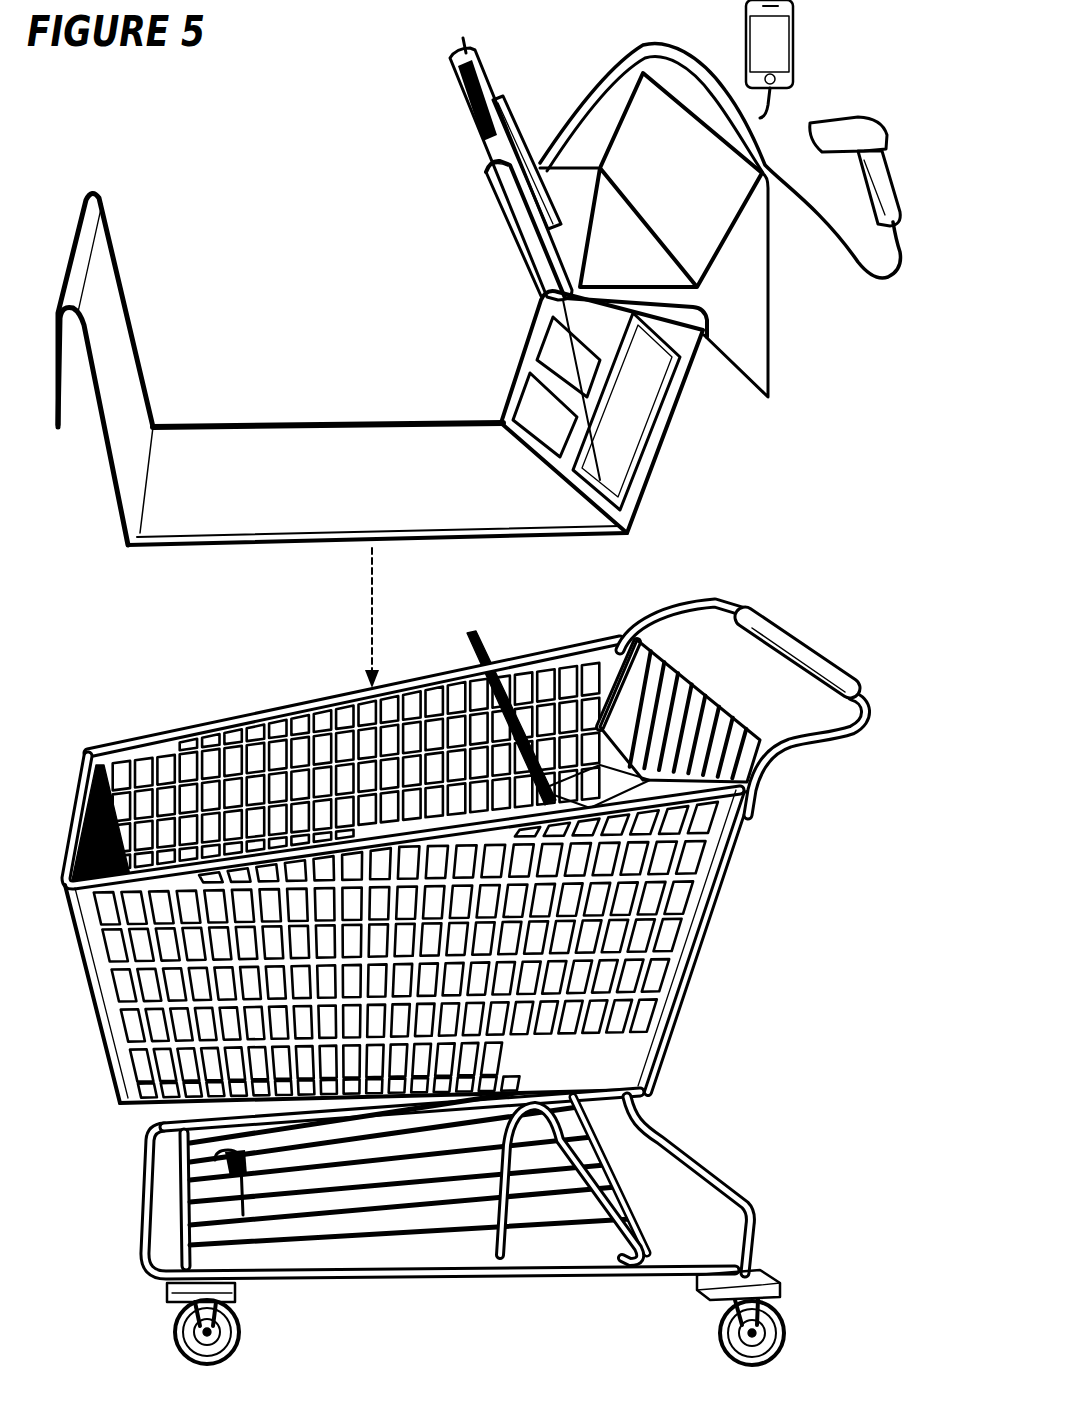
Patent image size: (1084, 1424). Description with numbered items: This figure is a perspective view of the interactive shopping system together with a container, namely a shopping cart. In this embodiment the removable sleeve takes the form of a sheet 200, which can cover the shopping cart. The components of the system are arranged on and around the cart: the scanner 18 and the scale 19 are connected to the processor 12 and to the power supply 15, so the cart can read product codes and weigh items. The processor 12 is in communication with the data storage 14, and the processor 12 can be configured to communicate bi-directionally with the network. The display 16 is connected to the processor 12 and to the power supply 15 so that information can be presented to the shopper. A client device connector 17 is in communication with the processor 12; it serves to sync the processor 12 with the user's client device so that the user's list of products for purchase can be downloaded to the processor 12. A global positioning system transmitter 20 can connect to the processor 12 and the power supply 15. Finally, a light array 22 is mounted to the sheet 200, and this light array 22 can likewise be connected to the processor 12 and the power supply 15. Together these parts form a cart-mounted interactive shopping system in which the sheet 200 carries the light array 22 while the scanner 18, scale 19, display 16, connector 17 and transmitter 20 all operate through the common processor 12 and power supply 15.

The sheet 200 is at (122, 330).
The scale 19 is at (350, 447).
The processor 12 is at (553, 348).
The data storage 14 is at (535, 405).
The power supply 15 is at (640, 420).
The display 16 is at (523, 140).
The client device connector 17 is at (682, 47).
The scanner 18 is at (870, 120).
The global positioning system transmitter 20 is at (462, 40).
The light array 22 is at (470, 93).